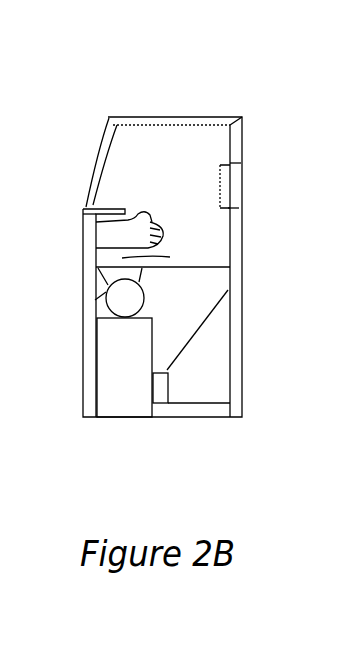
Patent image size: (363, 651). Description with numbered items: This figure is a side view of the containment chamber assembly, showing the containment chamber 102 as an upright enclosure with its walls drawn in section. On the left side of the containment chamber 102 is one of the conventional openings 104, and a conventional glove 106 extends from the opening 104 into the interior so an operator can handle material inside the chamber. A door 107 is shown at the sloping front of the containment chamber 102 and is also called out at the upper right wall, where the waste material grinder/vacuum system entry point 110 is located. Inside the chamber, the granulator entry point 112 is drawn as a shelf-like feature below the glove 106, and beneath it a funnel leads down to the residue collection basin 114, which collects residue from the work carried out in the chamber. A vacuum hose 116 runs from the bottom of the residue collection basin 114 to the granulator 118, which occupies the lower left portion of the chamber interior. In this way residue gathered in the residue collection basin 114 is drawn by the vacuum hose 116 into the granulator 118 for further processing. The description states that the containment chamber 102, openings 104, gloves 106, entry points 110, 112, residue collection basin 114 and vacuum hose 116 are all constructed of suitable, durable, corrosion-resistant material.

The containment chamber 102 is at (241, 303).
The opening 104 is at (79, 231).
The glove 106 is at (143, 208).
The door 107 is at (102, 151).
The waste material grinder/vacuum system entry point 110 is at (232, 187).
The granulator entry point 112 is at (162, 272).
The residue collection basin 114 is at (185, 318).
The vacuum hose 116 is at (167, 401).
The granulator 118 is at (97, 352).